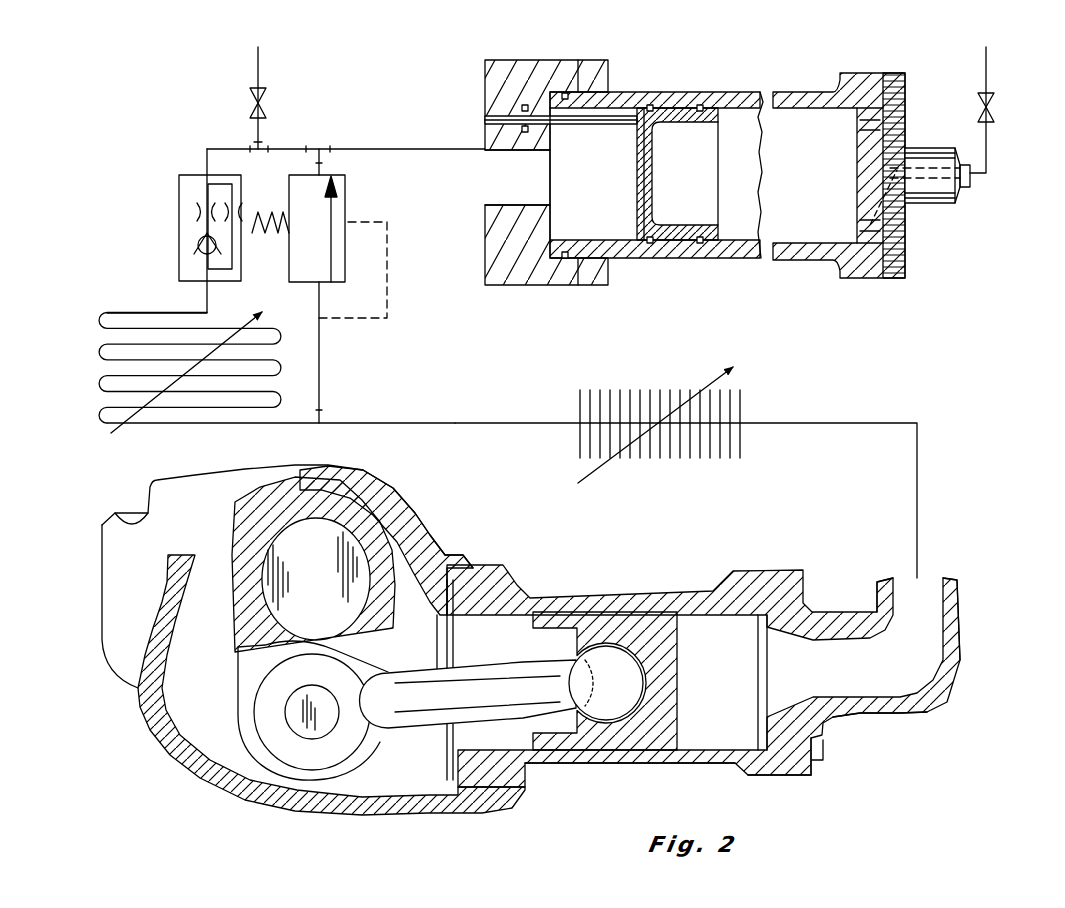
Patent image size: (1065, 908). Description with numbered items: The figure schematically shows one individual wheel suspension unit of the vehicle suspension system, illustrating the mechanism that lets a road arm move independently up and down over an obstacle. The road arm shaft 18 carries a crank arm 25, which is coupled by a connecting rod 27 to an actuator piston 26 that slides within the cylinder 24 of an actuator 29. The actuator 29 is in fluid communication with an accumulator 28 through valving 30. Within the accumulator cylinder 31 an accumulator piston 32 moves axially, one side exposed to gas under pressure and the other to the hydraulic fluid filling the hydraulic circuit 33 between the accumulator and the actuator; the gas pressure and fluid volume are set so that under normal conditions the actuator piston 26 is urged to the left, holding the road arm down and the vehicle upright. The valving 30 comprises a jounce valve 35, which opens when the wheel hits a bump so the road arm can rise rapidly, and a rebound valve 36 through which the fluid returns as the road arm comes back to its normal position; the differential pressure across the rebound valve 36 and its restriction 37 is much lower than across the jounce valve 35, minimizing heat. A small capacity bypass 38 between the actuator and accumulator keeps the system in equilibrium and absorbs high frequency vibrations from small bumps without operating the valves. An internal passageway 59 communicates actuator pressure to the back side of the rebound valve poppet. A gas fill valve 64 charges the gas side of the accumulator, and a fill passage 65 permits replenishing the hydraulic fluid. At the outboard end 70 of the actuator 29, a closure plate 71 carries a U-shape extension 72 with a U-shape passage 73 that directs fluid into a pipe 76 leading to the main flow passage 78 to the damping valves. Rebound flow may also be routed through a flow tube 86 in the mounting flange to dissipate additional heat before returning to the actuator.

The road arm shaft 18 is at (262, 588).
The cylinder 24 is at (662, 764).
The crank arm 25 is at (243, 660).
The actuator piston 26 is at (668, 662).
The connecting rod 27 is at (488, 666).
The accumulator 28 is at (727, 145).
The actuator 29 is at (673, 668).
The valving 30 is at (171, 213).
The accumulator cylinder 31 is at (725, 92).
The accumulator piston 32 is at (637, 167).
The hydraulic circuit 33 is at (372, 418).
The jounce valve 35 is at (351, 192).
The rebound valve 36 is at (193, 237).
The restriction 37 is at (195, 203).
The bypass 38 is at (248, 203).
The internal passageway 59 is at (208, 296).
The gas fill valve 64 is at (975, 105).
The fill passage 65 is at (247, 108).
The outboard end 70 is at (775, 776).
The closure plate 71 is at (817, 768).
The U-shape extension 72 is at (898, 708).
The U-shape passage 73 is at (930, 680).
The pipe 76 is at (647, 386).
The main flow passage 78 is at (455, 423).
The flow tube 86 is at (96, 328).